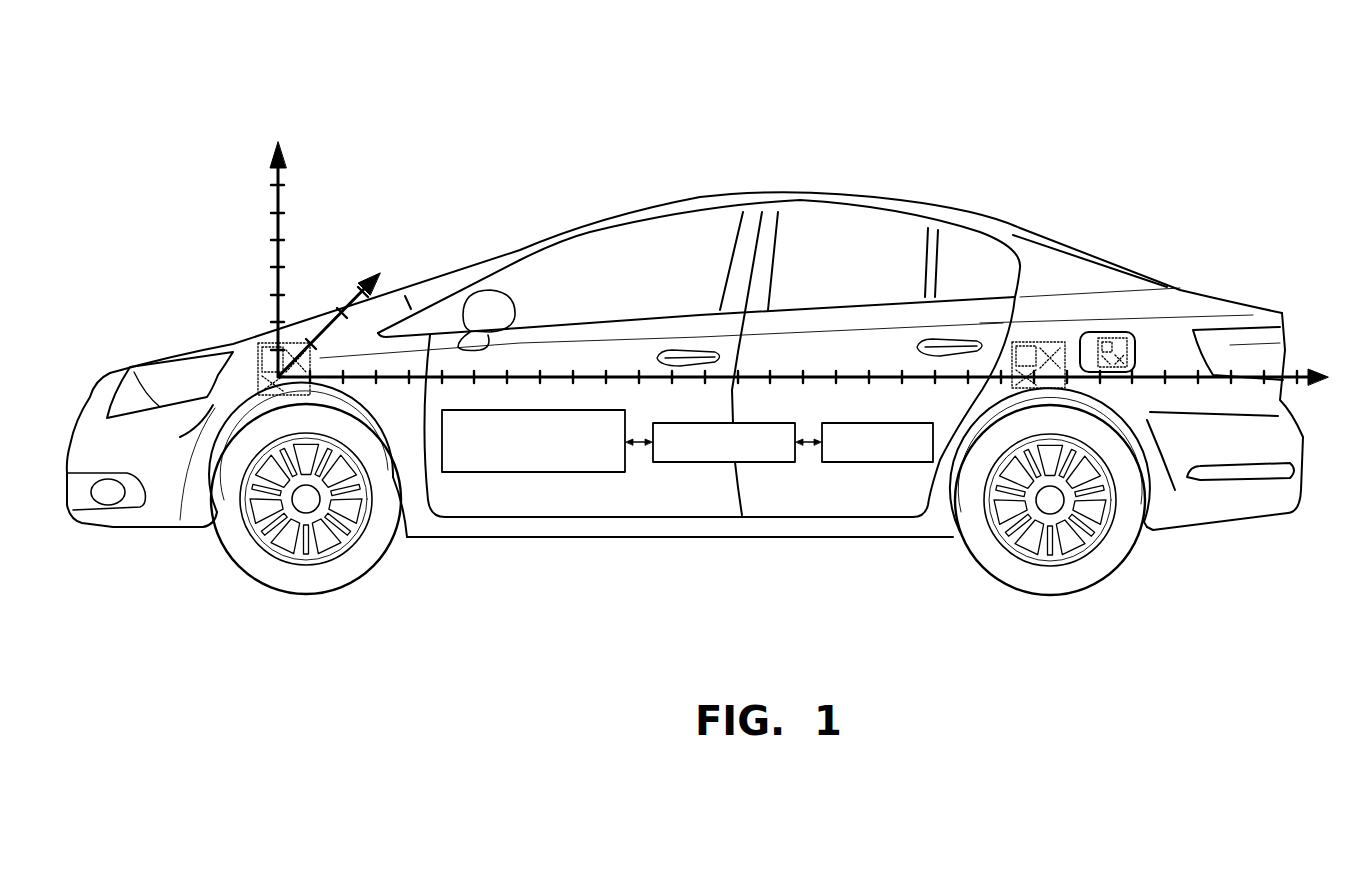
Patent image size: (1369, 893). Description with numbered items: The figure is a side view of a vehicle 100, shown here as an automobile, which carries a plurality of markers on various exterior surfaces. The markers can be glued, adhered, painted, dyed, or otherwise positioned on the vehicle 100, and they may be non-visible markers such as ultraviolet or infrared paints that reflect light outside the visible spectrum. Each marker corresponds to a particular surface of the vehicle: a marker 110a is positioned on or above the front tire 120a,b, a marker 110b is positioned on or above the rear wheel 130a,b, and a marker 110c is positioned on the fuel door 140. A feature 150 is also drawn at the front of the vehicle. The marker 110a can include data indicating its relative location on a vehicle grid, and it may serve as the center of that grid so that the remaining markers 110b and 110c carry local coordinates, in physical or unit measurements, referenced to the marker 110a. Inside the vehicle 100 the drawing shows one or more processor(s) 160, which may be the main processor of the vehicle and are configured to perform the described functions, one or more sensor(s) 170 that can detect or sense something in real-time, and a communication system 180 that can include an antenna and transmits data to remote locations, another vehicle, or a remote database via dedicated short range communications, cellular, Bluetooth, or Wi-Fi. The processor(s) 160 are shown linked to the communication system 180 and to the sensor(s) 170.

The vehicle 100 is at (1103, 156).
The marker 110a is at (257, 357).
The marker 110b is at (1027, 342).
The marker 110c is at (1118, 337).
The front tire 120a,b is at (233, 557).
The rear wheel 130a,b is at (988, 557).
The fuel door 140 is at (1098, 332).
The front bumper 150 is at (180, 437).
The processor(s) 160 is at (693, 462).
The sensor(s) 170 is at (862, 462).
The communication system 180 is at (540, 472).